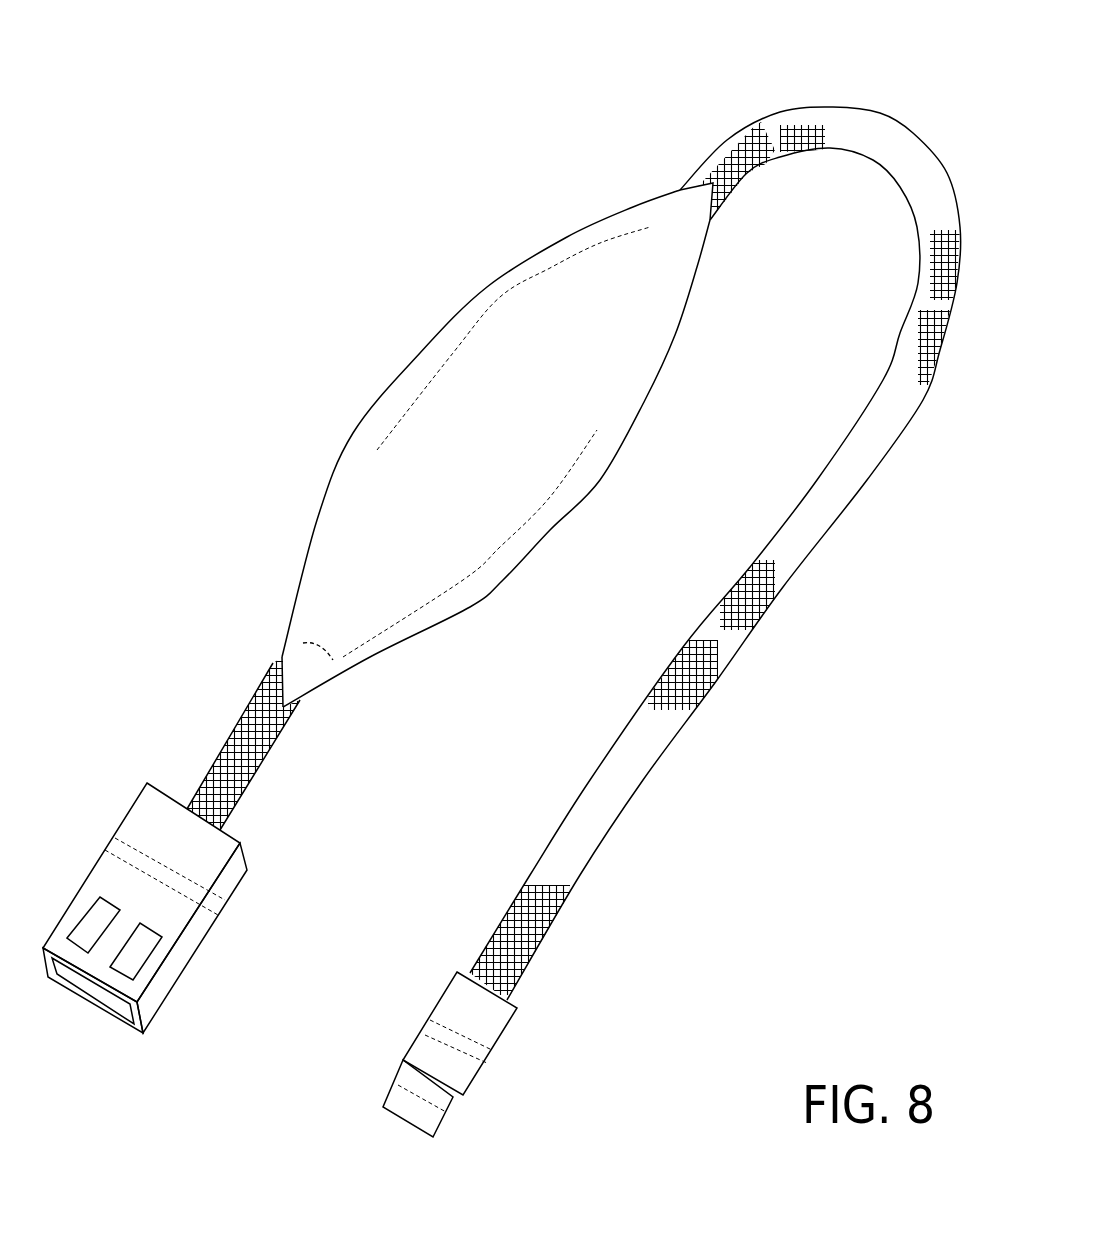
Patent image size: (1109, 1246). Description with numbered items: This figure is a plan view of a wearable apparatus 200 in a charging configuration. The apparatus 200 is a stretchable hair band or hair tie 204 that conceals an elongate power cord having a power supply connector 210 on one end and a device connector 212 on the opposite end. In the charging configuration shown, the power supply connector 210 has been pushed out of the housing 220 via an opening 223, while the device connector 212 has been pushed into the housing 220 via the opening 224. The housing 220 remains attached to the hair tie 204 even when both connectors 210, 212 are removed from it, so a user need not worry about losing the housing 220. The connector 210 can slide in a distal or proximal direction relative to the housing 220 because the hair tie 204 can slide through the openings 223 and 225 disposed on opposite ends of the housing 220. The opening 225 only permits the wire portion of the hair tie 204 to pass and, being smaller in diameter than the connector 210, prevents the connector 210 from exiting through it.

The wearable apparatus 200 is at (218, 158).
The hair tie 204 is at (835, 107).
The power supply connector 210 is at (110, 870).
The device connector 212 is at (467, 1067).
The housing 220 is at (427, 427).
The opening 223 is at (273, 657).
The opening 224 is at (343, 657).
The opening 225 is at (680, 189).